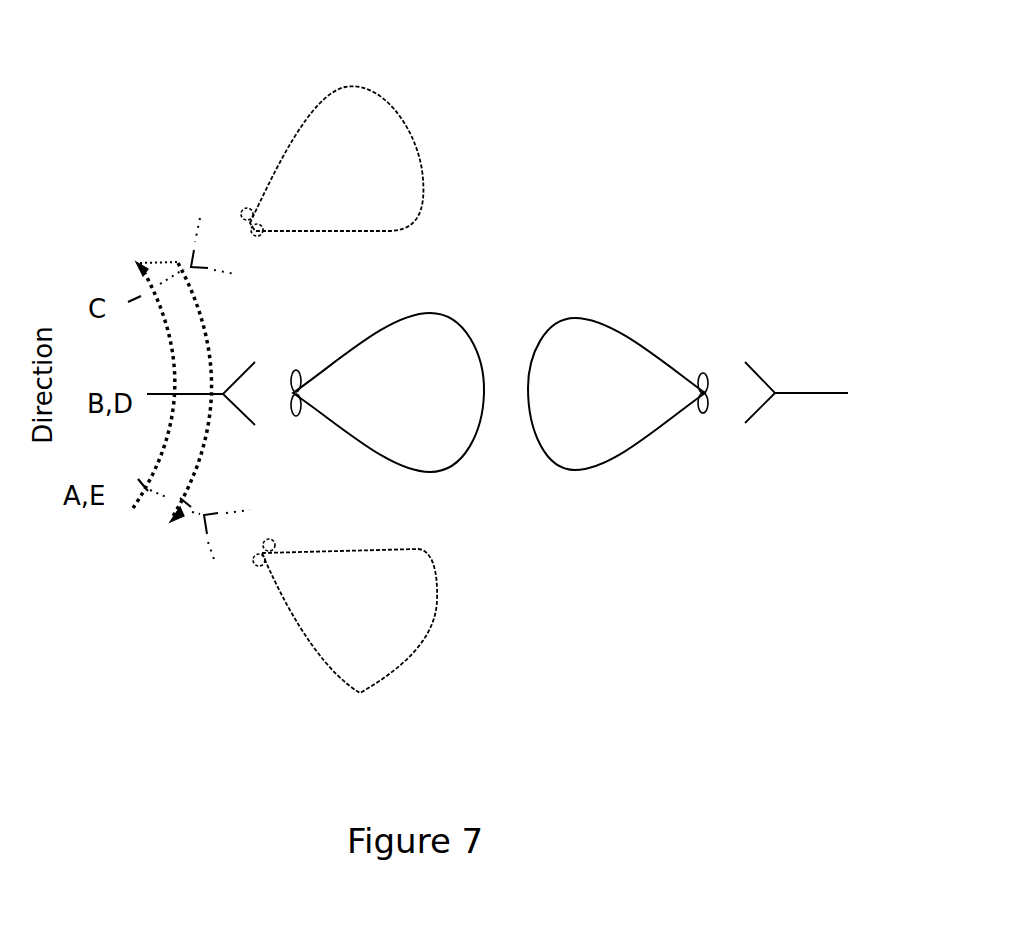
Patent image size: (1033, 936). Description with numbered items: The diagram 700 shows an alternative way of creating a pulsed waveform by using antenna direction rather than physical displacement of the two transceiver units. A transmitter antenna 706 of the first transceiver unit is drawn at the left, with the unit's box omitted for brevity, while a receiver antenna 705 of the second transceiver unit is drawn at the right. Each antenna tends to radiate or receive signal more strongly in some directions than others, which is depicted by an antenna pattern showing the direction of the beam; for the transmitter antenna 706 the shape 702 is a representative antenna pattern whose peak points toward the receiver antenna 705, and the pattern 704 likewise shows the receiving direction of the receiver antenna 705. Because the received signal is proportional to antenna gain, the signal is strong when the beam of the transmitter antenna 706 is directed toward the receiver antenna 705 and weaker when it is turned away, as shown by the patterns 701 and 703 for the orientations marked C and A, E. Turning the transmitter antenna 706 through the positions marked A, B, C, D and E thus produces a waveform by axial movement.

The diagram 700 is at (225, 676).
The antenna pattern 701 is at (403, 113).
The antenna pattern 702 is at (445, 312).
The antenna pattern 703 is at (438, 628).
The antenna pattern 704 is at (607, 332).
The receiver antenna 705 is at (806, 393).
The transmitter antenna 706 is at (175, 393).